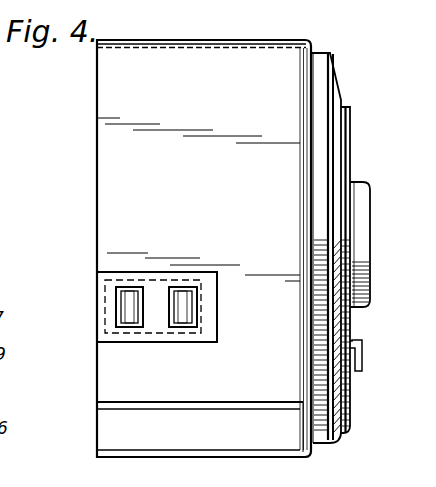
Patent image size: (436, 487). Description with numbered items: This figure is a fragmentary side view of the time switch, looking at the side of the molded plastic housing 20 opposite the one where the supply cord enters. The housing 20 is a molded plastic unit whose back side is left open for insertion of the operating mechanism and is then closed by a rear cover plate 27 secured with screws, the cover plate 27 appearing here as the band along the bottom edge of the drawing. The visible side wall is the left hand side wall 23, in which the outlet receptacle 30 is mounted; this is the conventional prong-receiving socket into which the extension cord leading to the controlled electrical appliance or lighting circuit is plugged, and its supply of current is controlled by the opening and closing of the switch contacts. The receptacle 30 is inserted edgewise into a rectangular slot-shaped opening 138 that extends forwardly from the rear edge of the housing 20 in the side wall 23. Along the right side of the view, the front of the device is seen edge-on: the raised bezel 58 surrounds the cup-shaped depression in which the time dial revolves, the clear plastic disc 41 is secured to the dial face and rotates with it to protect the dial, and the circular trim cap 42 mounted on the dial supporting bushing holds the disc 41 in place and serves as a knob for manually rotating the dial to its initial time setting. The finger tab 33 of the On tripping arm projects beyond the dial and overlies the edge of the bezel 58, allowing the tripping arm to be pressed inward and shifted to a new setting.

The housing 20 is at (216, 33).
The left hand side wall 23 is at (199, 199).
The rear cover plate 27 is at (104, 430).
The outlet receptacle 30 is at (210, 308).
The slot-shaped opening 138 is at (187, 338).
The raised bezel 58 is at (324, 89).
The clear plastic disc 41 is at (349, 117).
The trim cap 42 is at (362, 213).
The finger tab 33 is at (362, 353).